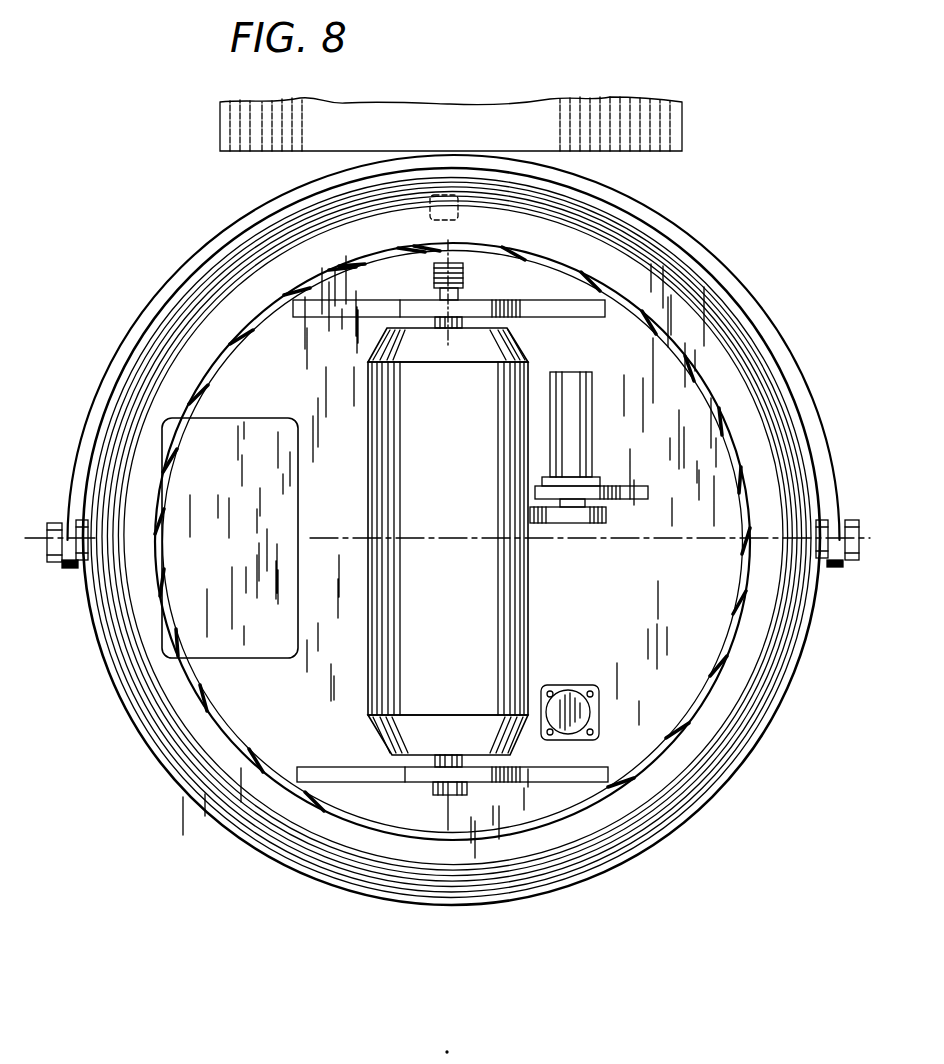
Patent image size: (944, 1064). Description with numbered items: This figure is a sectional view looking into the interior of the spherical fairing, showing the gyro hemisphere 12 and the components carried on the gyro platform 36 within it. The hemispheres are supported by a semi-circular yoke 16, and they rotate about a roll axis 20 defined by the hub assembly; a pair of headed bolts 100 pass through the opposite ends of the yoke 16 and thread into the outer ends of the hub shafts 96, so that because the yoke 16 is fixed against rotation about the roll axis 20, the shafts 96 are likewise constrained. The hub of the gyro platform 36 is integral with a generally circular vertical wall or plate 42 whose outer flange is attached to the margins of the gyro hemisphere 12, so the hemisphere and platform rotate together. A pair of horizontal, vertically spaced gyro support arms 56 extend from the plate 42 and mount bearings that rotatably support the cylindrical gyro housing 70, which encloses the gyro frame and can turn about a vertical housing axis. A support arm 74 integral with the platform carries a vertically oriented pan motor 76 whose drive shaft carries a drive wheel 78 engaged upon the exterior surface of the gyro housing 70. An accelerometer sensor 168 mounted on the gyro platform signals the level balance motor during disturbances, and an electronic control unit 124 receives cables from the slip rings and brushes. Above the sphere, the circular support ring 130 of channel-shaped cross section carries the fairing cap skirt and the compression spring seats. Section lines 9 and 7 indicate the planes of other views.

The circular support ring 130 is at (684, 122).
The semi-circular yoke 16 is at (674, 224).
The gyro hemisphere 12 is at (257, 318).
The gyro platform 36 is at (634, 333).
The vertical wall or plate 42 is at (232, 368).
The accelerometer sensor 168 is at (460, 212).
The electronic control unit 124 is at (257, 418).
The roll axis 20 is at (684, 537).
The gyro support plates or arms 56 is at (573, 310).
The cylindrical gyro housing 70 is at (460, 588).
The pan motor 76 is at (590, 388).
The support arm 74 is at (646, 493).
The drive wheel 78 is at (563, 520).
The headed bolts 100 is at (55, 523).
The hub shafts 96 is at (78, 565).
The section line 9 is at (438, 293).
The section line 7 is at (323, 542).